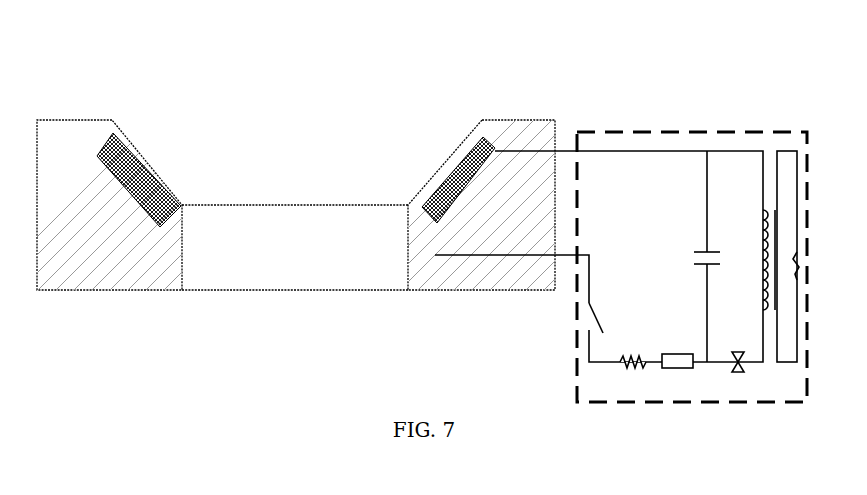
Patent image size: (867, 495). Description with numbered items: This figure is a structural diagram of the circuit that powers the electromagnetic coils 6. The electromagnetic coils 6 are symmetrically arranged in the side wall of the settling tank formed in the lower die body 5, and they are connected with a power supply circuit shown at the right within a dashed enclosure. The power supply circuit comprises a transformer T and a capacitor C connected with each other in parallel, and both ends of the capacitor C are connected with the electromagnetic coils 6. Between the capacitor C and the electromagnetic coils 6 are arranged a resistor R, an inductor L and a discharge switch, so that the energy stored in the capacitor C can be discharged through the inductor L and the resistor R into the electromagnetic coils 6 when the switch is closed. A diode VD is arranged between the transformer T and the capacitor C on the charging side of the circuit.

The lower die body 5 is at (48, 178).
The electromagnetic coil 6 is at (138, 177).
The capacitor C is at (698, 256).
The inductor L is at (633, 350).
The resistor R is at (677, 350).
The diode VD is at (740, 352).
The transformer T is at (773, 256).